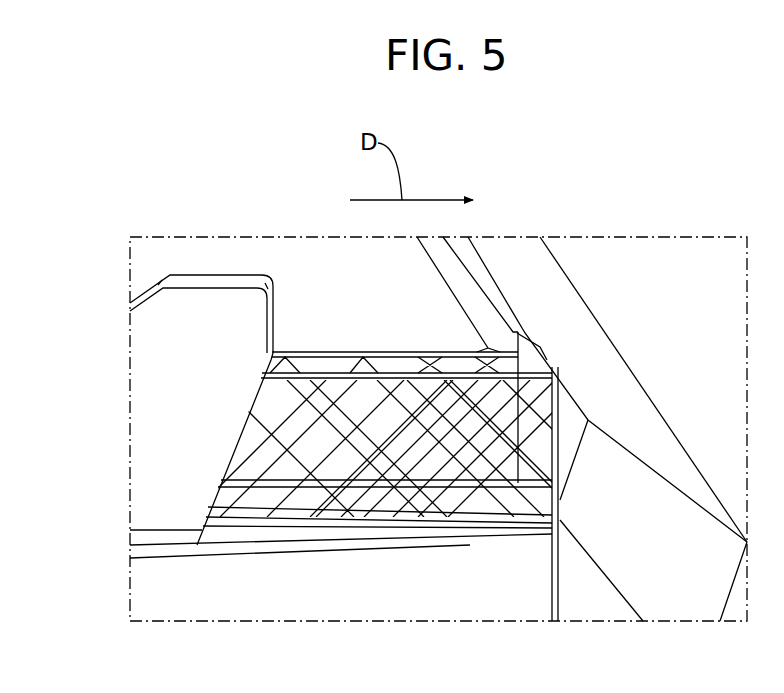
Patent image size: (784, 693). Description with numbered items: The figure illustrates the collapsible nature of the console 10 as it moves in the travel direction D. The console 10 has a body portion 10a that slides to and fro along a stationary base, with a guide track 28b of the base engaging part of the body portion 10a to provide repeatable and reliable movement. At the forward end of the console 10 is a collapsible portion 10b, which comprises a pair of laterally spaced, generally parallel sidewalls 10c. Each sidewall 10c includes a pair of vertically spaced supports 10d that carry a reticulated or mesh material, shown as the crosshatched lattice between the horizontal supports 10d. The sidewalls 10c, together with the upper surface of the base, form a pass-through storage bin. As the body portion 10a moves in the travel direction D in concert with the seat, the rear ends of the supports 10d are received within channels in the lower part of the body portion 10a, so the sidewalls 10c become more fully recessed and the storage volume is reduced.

The console 10 is at (191, 260).
The body portion 10a is at (242, 282).
The collapsible portion 10b is at (135, 540).
The sidewall 10c is at (326, 320).
The support 10d is at (388, 372).
The guide track 28b is at (295, 610).